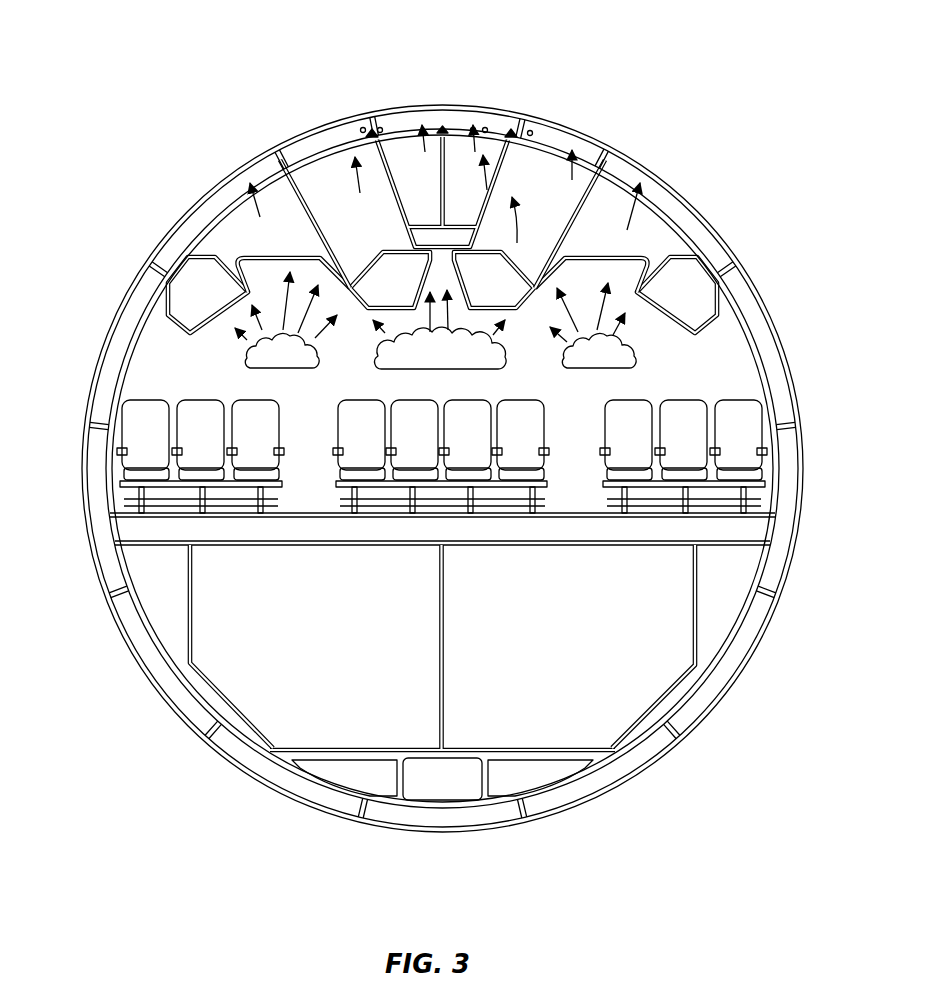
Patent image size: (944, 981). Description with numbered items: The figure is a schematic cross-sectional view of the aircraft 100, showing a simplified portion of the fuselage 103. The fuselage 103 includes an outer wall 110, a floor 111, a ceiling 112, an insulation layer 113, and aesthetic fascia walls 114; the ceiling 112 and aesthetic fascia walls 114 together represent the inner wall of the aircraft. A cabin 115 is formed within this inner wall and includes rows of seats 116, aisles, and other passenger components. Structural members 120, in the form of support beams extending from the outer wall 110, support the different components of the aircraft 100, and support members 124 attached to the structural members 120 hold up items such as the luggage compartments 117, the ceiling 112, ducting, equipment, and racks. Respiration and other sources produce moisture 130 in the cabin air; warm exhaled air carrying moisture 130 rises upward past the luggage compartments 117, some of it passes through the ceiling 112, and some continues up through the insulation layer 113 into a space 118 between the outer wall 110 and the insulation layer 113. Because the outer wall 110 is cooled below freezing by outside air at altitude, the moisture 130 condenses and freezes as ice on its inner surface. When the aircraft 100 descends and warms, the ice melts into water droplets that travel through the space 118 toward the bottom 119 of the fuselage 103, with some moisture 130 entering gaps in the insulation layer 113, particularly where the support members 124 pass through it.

The aircraft 100 is at (155, 103).
The fuselage 103 is at (683, 198).
The outer wall 110 is at (330, 123).
The floor 111 is at (745, 525).
The ceiling 112 is at (650, 257).
The insulation layer 113 is at (230, 213).
The aesthetic fascia walls 114 is at (745, 373).
The cabin 115 is at (192, 348).
The seats 116 is at (205, 415).
The luggage compartments 117 is at (217, 300).
The space 118 is at (303, 134).
The bottom 119 is at (432, 818).
The structural members 120 is at (262, 165).
The support members 124 is at (247, 183).
The moisture 130 is at (477, 112).